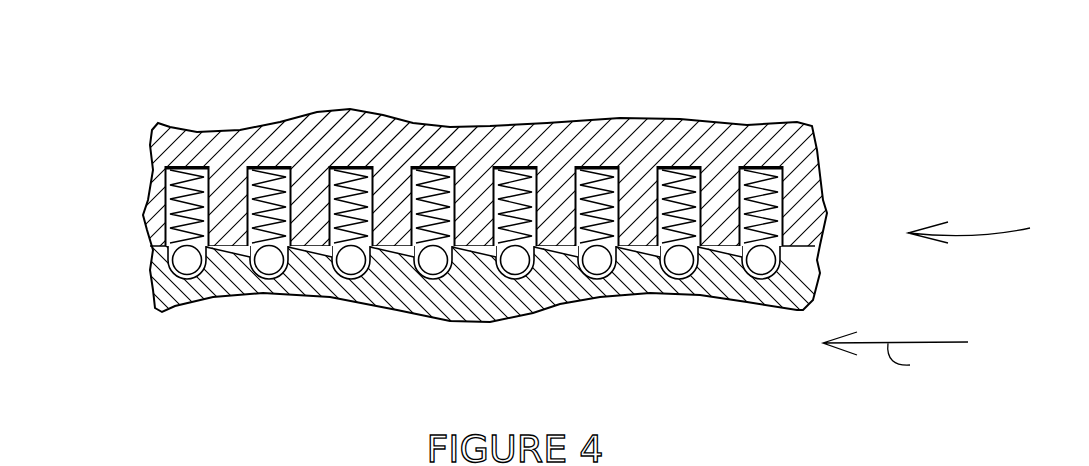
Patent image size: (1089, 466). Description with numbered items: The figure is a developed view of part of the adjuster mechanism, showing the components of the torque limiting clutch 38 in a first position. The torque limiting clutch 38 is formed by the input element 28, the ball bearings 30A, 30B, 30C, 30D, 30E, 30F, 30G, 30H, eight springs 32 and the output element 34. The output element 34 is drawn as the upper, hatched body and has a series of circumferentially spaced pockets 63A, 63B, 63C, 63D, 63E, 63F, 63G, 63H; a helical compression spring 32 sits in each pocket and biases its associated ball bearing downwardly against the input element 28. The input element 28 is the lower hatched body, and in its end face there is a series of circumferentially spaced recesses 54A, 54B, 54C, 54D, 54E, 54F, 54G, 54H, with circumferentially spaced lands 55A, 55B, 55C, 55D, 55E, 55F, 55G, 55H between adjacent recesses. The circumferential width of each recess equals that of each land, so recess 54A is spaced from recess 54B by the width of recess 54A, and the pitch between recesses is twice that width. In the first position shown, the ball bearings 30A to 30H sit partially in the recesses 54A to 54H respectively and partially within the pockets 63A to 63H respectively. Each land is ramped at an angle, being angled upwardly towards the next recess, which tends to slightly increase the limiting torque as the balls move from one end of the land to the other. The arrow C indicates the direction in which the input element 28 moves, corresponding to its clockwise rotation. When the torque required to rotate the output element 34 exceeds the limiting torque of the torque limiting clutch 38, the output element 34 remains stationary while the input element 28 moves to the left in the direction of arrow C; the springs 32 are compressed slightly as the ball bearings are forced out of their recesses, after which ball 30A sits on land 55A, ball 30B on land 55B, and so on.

The input element 28 is at (810, 268).
The output element 34 is at (810, 220).
The springs 32 is at (214, 170).
The torque limiting clutch 38 is at (989, 232).
The arrow C is at (895, 356).
The pocket 63A is at (190, 167).
The pocket 63B is at (283, 167).
The pocket 63C is at (365, 167).
The pocket 63D is at (447, 167).
The pocket 63E is at (529, 167).
The pocket 63F is at (611, 167).
The pocket 63G is at (693, 167).
The pocket 63H is at (775, 167).
The ball bearing 30A is at (187, 260).
The ball bearing 30B is at (269, 260).
The ball bearing 30C is at (351, 260).
The ball bearing 30D is at (433, 260).
The ball bearing 30E is at (515, 260).
The ball bearing 30F is at (597, 260).
The ball bearing 30G is at (679, 260).
The ball bearing 30H is at (761, 260).
The recess 54A is at (172, 272).
The recess 54B is at (255, 274).
The recess 54C is at (337, 274).
The recess 54D is at (419, 274).
The recess 54E is at (501, 274).
The recess 54F is at (583, 274).
The recess 54G is at (665, 274).
The recess 54H is at (748, 274).
The land 55A is at (242, 256).
The land 55B is at (324, 256).
The land 55C is at (406, 256).
The land 55D is at (488, 256).
The land 55E is at (570, 256).
The land 55F is at (652, 256).
The land 55G is at (734, 256).
The land 55H is at (800, 288).